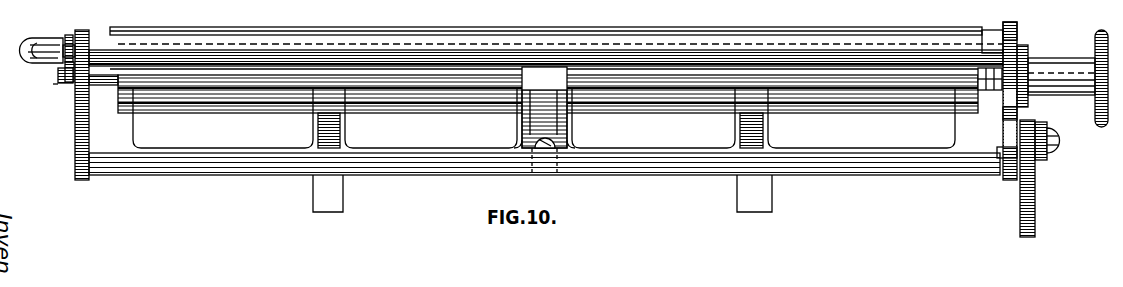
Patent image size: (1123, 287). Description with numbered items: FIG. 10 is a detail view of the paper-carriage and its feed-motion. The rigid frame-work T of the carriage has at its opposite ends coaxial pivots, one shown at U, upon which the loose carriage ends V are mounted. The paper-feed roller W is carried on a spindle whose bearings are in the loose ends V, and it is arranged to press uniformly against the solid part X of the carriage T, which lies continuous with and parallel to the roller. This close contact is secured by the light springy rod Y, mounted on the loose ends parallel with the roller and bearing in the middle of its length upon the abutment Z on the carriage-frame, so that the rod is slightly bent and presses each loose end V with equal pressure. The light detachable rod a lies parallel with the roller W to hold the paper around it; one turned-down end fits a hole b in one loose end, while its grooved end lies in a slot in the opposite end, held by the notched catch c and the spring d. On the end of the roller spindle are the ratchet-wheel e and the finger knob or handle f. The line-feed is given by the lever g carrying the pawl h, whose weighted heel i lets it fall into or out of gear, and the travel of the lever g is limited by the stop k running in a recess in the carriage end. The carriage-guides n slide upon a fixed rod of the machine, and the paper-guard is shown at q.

The paper-guard q is at (48, 41).
The notched catch c is at (68, 43).
The spring d is at (60, 74).
The coaxial pivot U is at (53, 84).
The loose carriage end V is at (77, 122).
The rigid frame-work of the carriage T is at (117, 122).
The solid or rigid part of the carriage X is at (228, 35).
The paper-feed roller W is at (282, 92).
The light rod Y is at (230, 163).
The carriage-guide n is at (343, 193).
The abutment Z is at (548, 173).
The light detachable rod a is at (638, 43).
The hole in loose carriage end b is at (1018, 45).
The ratchet-wheel e is at (1029, 57).
The pawl h is at (1008, 121).
The stop k is at (1003, 150).
The lever g is at (1050, 147).
The finger knob or handle f is at (1093, 116).
The heel of the pawl i is at (1023, 208).